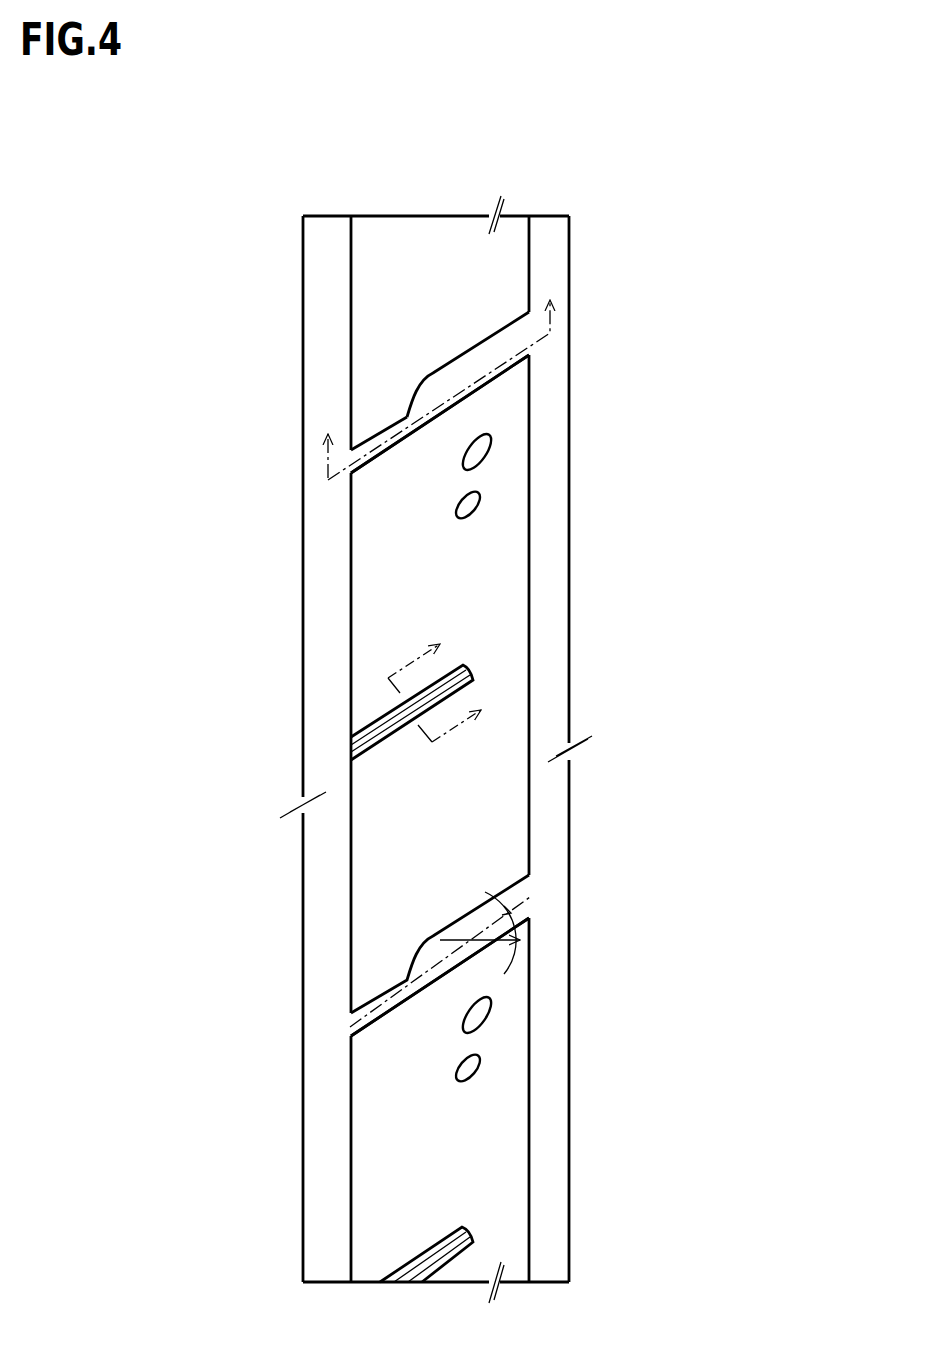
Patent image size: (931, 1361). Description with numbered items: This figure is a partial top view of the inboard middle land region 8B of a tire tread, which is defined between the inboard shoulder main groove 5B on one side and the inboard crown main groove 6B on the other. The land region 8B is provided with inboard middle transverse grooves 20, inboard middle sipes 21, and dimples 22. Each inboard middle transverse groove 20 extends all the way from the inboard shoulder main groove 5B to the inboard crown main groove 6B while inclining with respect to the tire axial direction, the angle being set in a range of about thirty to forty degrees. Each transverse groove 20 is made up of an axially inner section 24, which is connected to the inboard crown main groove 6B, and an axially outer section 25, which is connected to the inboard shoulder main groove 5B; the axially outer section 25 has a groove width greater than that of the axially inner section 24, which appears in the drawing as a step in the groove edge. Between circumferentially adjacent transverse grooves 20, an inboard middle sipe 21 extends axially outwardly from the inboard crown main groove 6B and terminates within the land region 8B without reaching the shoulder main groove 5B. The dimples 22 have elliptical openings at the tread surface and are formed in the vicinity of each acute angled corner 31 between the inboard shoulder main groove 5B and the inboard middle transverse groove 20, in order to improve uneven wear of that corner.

The inboard crown main groove 6B is at (328, 243).
The inboard middle land region 8B is at (439, 243).
The inboard shoulder main groove 5B is at (547, 243).
The inboard middle transverse groove 20 is at (340, 642).
The axially outer section 25 is at (475, 368).
The axially inner section 24 is at (378, 430).
The acute angled corner 31 is at (498, 398).
The dimple 22 is at (488, 453).
The inboard middle sipe 21 is at (372, 722).